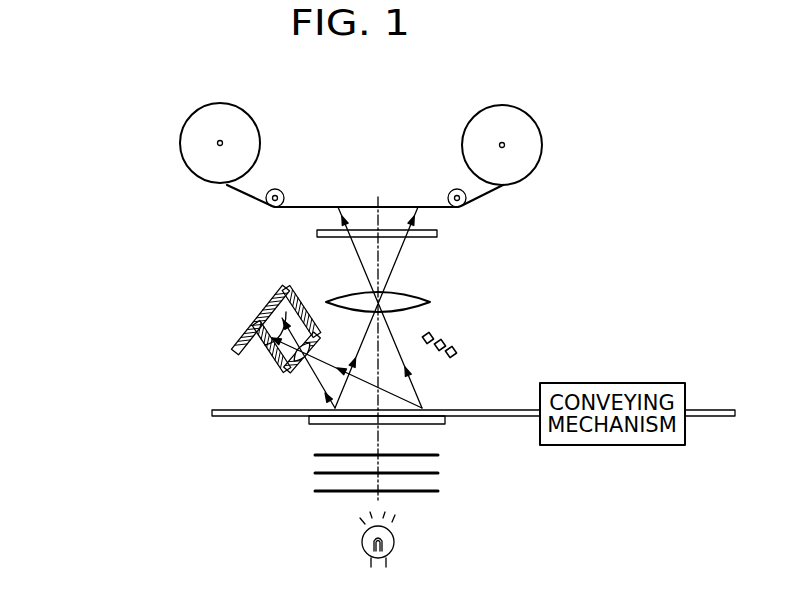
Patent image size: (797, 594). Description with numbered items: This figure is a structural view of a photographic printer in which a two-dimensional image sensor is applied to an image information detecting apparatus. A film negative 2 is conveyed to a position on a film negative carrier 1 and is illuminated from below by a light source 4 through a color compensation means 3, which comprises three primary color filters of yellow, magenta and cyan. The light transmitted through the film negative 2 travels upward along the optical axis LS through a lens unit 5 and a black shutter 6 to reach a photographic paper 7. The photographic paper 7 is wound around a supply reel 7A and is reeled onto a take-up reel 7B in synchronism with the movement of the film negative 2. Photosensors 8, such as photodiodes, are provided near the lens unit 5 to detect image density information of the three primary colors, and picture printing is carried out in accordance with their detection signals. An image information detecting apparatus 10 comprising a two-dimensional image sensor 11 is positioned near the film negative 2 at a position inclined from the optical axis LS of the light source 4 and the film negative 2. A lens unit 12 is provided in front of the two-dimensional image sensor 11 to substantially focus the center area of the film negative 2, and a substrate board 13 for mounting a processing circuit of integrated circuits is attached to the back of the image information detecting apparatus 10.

The film negative carrier 1 is at (445, 422).
The film negative 2 is at (240, 418).
The color compensation means 3 is at (447, 449).
The light source 4 is at (363, 537).
The lens unit 5 is at (412, 294).
The black shutter 6 is at (437, 234).
The photographic paper 7 is at (298, 205).
The supply reel 7A is at (181, 141).
The take-up reel 7B is at (542, 145).
The photosensors 8 is at (428, 320).
The image information detecting apparatus 10 is at (232, 336).
The two-dimensional image sensor 11 is at (262, 352).
The lens unit 12 is at (312, 348).
The substrate board 13 is at (257, 306).
The optical axis LS is at (380, 197).